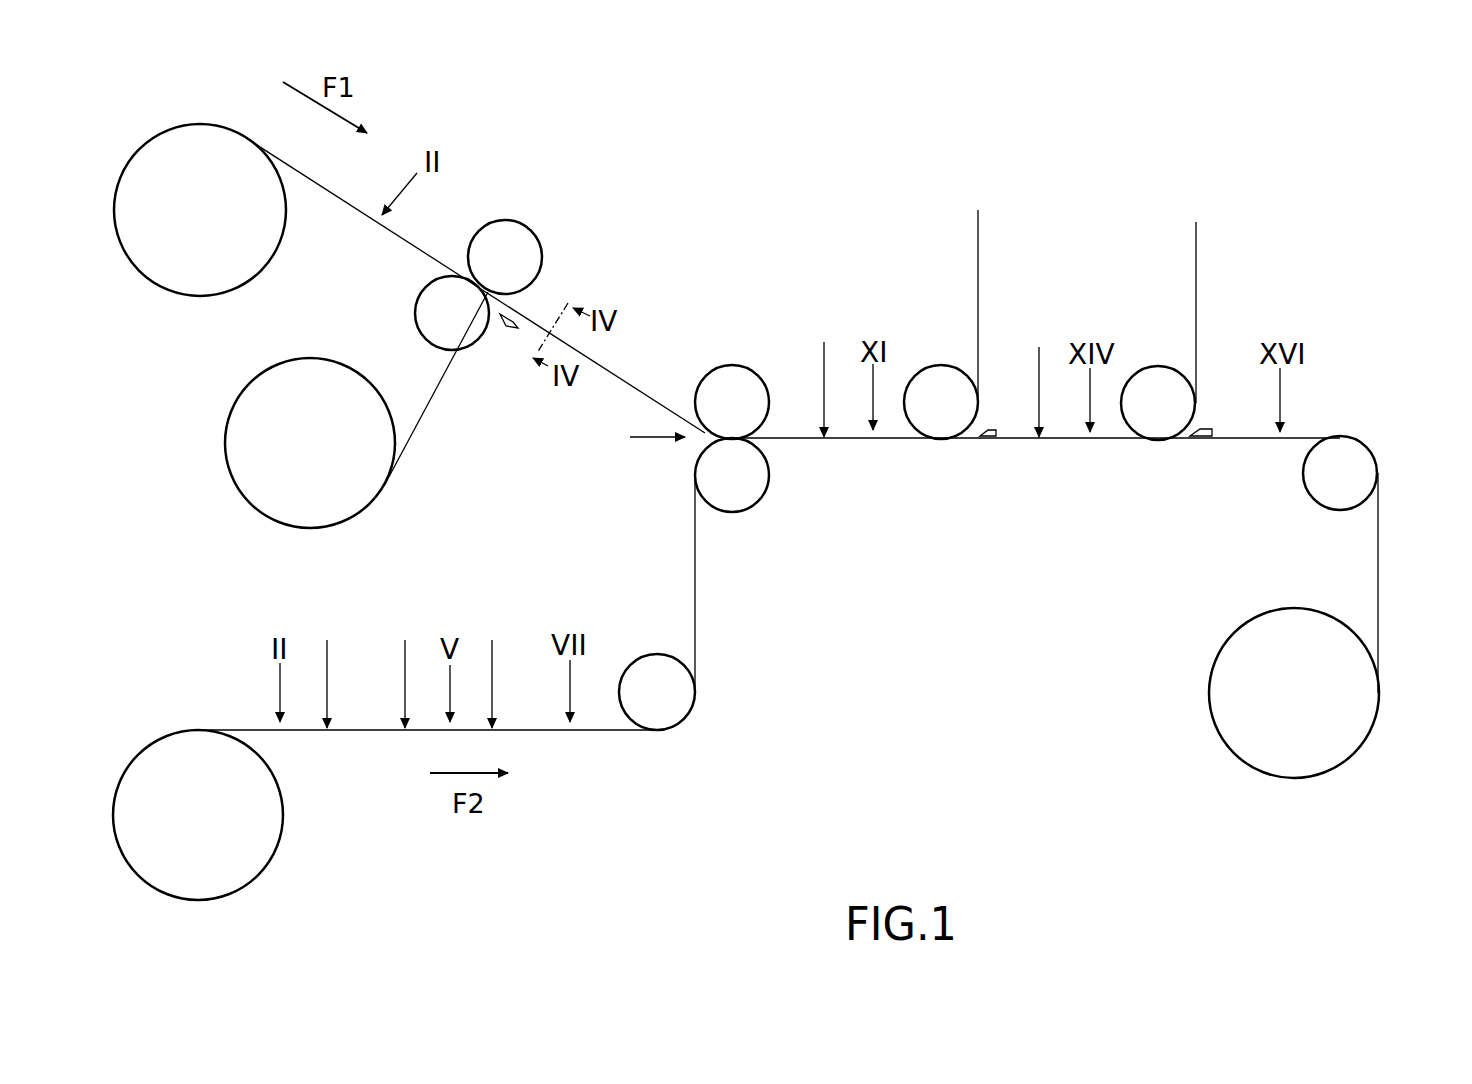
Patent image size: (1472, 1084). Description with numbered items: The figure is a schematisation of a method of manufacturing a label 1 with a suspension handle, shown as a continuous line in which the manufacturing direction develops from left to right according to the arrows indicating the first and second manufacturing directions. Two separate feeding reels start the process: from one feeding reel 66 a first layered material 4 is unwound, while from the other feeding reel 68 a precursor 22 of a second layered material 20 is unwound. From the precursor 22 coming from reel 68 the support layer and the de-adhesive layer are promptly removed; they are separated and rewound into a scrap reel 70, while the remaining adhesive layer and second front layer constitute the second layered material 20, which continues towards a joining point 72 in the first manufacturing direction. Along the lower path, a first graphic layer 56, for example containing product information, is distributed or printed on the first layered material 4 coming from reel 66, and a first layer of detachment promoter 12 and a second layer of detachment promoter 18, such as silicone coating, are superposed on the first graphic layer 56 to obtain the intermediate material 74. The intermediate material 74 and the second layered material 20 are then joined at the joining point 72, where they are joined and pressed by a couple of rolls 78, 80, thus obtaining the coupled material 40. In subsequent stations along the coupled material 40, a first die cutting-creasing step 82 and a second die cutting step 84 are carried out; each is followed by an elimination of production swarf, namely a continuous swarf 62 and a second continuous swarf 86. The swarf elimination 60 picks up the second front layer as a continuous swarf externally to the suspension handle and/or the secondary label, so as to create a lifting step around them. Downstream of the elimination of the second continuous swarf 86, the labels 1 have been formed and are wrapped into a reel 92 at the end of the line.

The label 1 is at (1381, 618).
The first layered material 4 is at (315, 736).
The first layer of detachment promoter 12 is at (409, 640).
The second layer of detachment promoter 18 is at (496, 642).
The second layered material 20 is at (530, 316).
The precursor of the second layered material 22 is at (336, 200).
The coupled material 40 is at (790, 444).
The first graphic layer 56 is at (331, 640).
The swarf elimination step 60 is at (968, 447).
The continuous swarf 62 is at (974, 210).
The feeding reel 66 is at (157, 738).
The feeding reel 68 is at (140, 146).
The scrap reel 70 is at (222, 470).
The joining point 72 is at (640, 440).
The intermediate material 74 is at (535, 736).
The roll 78 is at (723, 366).
The roll 80 is at (738, 514).
The first die cutting-creasing step 82 is at (832, 338).
The second die cutting step 84 is at (1046, 350).
The second continuous swarf 86 is at (1199, 222).
The reel 92 is at (1208, 692).